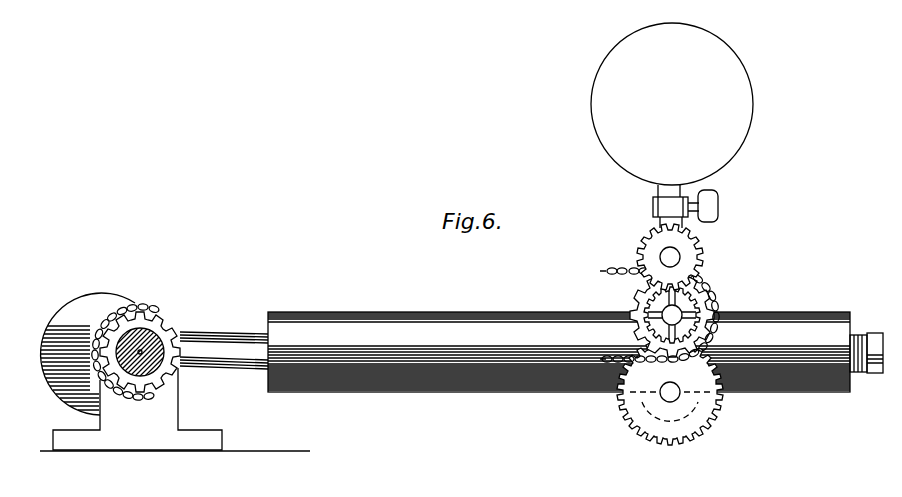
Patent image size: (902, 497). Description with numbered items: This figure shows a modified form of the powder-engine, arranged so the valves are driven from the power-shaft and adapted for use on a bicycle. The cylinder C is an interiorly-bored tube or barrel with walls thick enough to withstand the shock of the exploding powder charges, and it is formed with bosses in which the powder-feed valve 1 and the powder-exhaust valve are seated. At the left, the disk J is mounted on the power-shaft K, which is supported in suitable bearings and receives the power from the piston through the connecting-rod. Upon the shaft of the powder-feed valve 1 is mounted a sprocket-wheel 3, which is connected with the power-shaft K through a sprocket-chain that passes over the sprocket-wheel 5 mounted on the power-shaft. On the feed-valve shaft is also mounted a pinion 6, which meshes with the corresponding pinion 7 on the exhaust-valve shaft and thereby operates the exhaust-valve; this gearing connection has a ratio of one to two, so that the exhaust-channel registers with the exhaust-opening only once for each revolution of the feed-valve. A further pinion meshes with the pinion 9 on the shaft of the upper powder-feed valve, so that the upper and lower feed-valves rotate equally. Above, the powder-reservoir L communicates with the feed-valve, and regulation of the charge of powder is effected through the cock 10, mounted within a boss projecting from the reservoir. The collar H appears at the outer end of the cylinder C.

The gauge L is at (672, 110).
The cock 10 is at (696, 206).
The pinion 9 is at (656, 246).
The sprocket-wheel 3 is at (699, 296).
The pinion 6 is at (656, 304).
The pinion 7 is at (670, 392).
The sprocket-wheel 5 is at (168, 327).
The cylinder C is at (559, 352).
The shaft collar H is at (859, 343).
The disk J is at (88, 354).
The power-shaft K is at (175, 409).
The powder-feed valve 1 is at (221, 349).